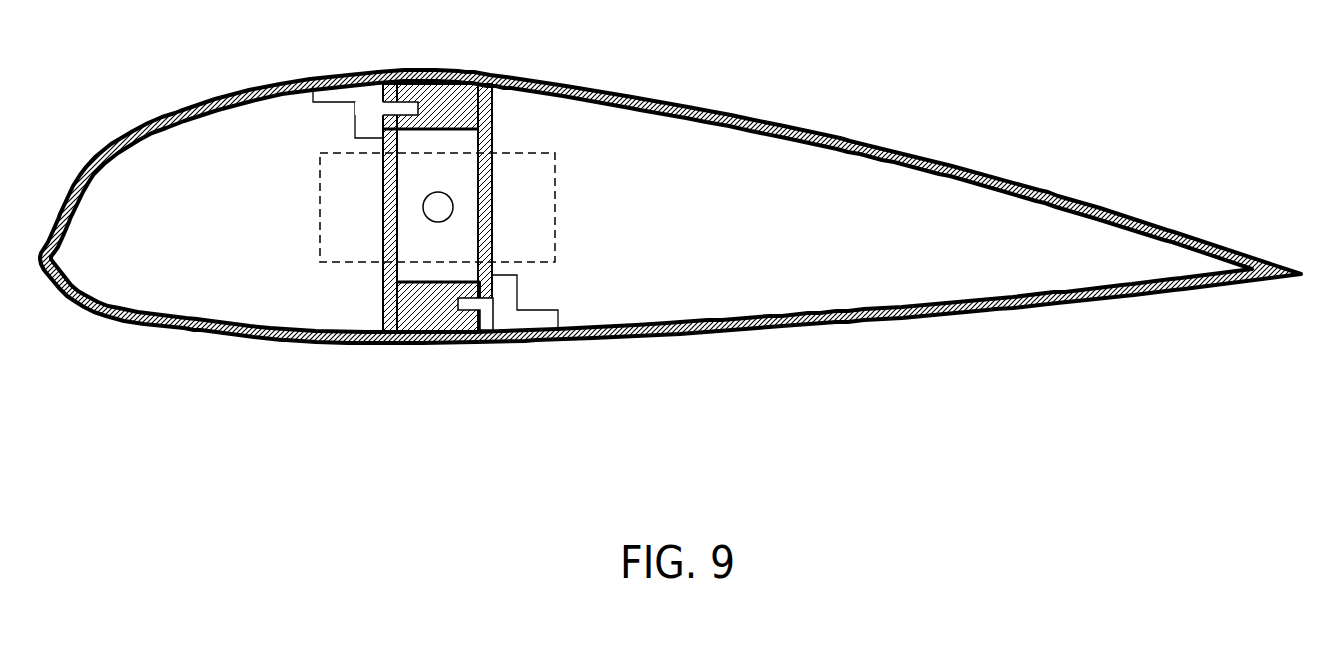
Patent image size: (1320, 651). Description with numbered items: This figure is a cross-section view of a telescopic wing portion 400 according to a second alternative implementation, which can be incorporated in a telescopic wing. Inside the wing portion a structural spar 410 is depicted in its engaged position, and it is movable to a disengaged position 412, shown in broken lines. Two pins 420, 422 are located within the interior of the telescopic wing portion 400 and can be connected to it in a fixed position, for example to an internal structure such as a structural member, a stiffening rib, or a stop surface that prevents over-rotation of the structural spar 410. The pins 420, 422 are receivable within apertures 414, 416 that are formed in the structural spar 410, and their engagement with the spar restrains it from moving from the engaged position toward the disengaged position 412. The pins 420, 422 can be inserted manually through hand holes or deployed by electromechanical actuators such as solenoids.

The telescopic wing portion 400 is at (887, 143).
The structural spar 410 is at (493, 116).
The disengaged position 412 is at (556, 218).
The aperture 414 is at (415, 70).
The aperture 416 is at (460, 339).
The pin 420 is at (416, 129).
The pin 422 is at (470, 282).